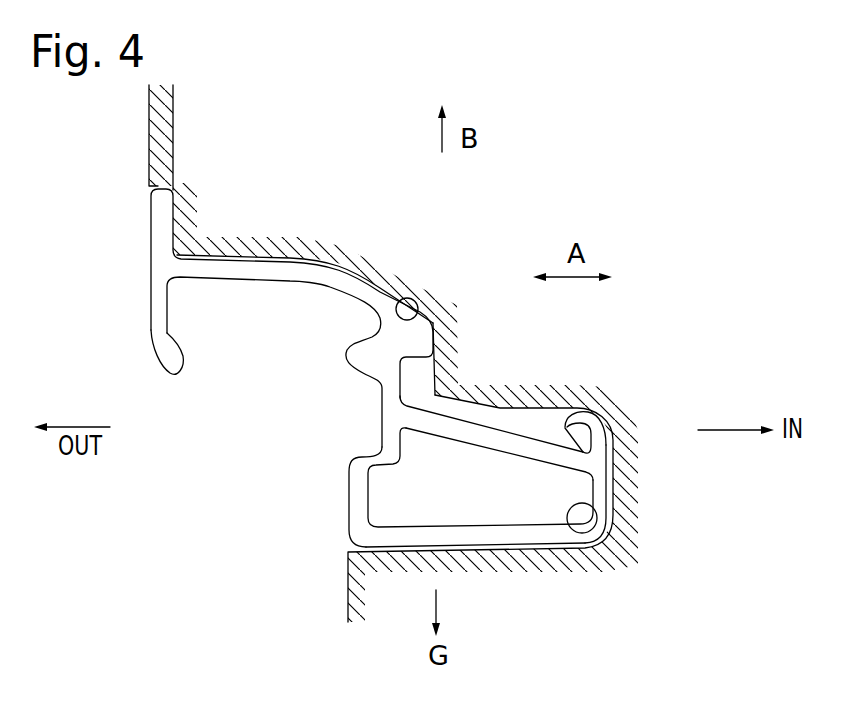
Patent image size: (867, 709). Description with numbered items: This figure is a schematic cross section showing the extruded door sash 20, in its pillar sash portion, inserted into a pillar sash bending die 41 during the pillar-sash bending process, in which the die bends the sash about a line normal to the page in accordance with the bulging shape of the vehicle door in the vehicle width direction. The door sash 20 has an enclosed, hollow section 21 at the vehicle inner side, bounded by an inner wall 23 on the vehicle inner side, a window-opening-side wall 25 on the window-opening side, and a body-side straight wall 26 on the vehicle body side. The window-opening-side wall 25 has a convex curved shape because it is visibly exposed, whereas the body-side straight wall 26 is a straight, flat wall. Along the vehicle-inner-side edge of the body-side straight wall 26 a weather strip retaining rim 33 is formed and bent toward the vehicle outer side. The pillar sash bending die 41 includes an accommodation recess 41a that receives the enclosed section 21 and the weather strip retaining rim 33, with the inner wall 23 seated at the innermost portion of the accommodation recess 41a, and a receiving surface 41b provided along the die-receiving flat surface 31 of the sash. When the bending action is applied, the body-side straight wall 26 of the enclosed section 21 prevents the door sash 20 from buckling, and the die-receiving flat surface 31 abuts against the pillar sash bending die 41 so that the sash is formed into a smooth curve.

The door sash 20 is at (325, 516).
The enclosed section 21 is at (563, 495).
The inner wall 23 is at (605, 502).
The window-opening-side wall 25 is at (511, 536).
The body-side straight wall 26 is at (488, 448).
The die-receiving flat surface 31 is at (436, 347).
The weather strip retaining rim 33 is at (584, 423).
The pillar sash bending die 41 is at (370, 605).
The accommodation recess 41a is at (568, 533).
The receiving surface 41b is at (406, 298).